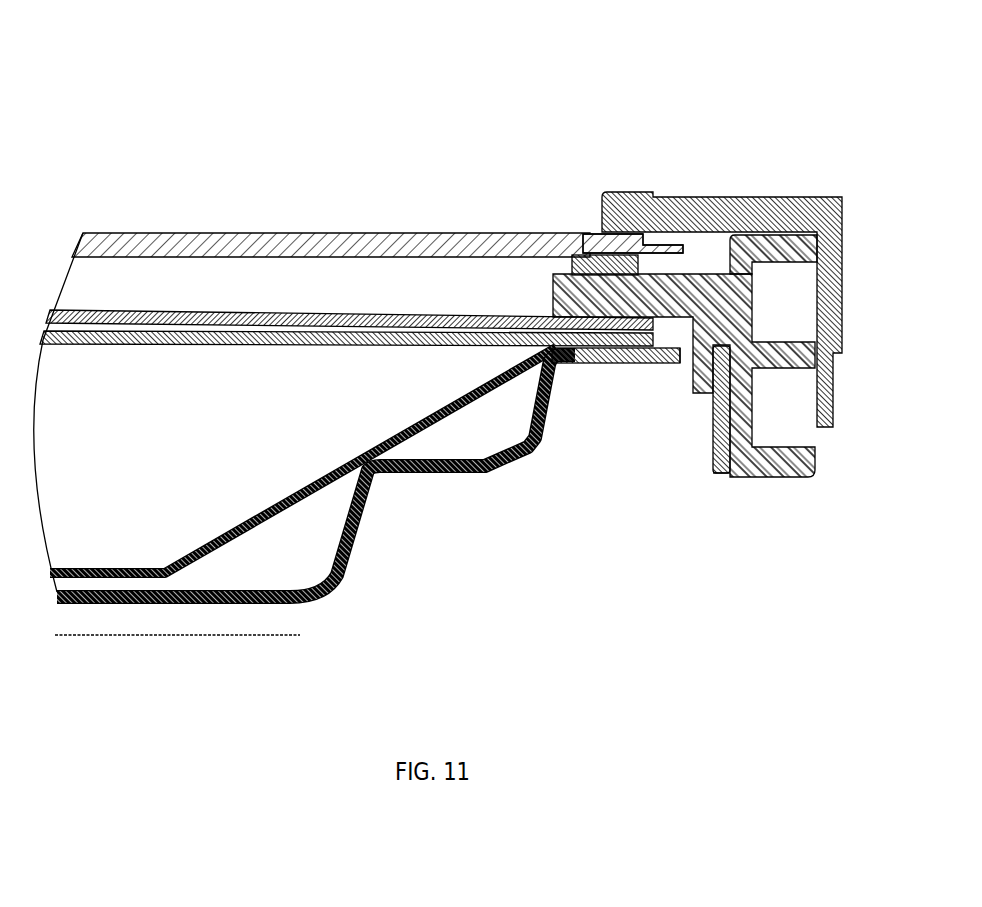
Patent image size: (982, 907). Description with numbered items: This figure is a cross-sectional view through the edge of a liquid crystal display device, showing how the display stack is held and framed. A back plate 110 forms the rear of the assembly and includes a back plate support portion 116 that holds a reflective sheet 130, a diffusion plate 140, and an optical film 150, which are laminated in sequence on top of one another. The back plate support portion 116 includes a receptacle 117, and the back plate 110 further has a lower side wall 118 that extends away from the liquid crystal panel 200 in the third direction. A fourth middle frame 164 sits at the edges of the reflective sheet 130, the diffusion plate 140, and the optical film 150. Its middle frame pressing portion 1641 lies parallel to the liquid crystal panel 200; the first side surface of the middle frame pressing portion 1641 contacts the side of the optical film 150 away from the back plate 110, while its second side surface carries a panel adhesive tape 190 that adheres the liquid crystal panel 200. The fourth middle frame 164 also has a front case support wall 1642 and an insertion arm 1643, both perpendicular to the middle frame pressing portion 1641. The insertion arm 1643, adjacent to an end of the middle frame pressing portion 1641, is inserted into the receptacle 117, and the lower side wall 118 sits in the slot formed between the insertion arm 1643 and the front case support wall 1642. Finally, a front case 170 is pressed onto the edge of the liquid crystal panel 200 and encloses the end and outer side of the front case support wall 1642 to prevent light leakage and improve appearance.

The back plate 110 is at (550, 422).
The back plate support portion 116 is at (608, 365).
The receptacle 117 is at (690, 354).
The lower side wall 118 is at (714, 476).
The reflective sheet 130 is at (455, 408).
The diffusion plate 140 is at (295, 331).
The optical film 150 is at (222, 311).
The fourth middle frame 164 is at (632, 82).
The middle frame pressing portion 1641 is at (629, 195).
The front case support wall 1642 is at (750, 235).
The insertion arm 1643 is at (713, 475).
The front case 170 is at (697, 278).
The panel adhesive tape 190 is at (588, 233).
The liquid crystal panel 200 is at (428, 233).